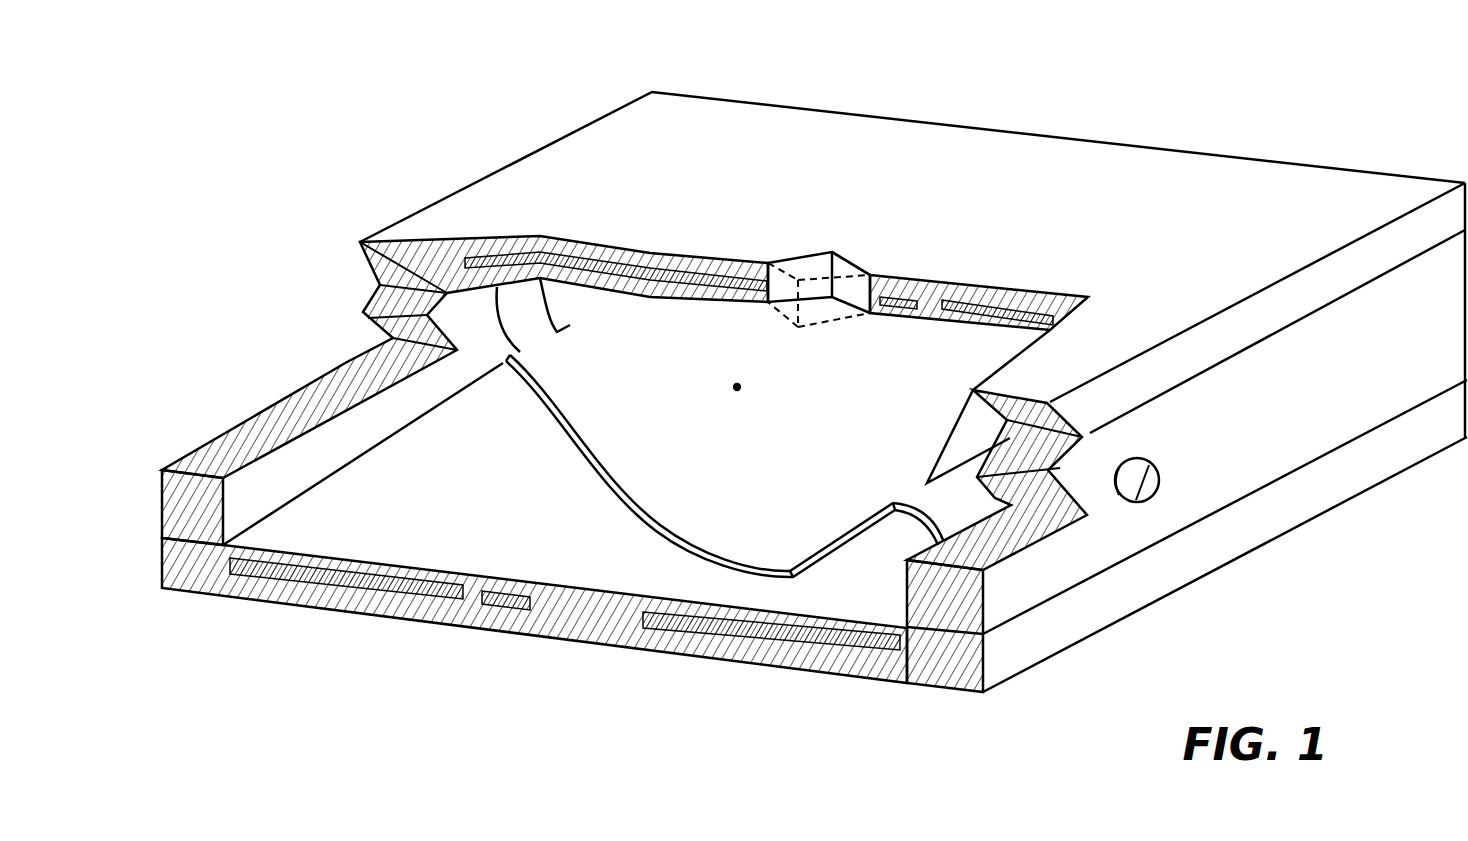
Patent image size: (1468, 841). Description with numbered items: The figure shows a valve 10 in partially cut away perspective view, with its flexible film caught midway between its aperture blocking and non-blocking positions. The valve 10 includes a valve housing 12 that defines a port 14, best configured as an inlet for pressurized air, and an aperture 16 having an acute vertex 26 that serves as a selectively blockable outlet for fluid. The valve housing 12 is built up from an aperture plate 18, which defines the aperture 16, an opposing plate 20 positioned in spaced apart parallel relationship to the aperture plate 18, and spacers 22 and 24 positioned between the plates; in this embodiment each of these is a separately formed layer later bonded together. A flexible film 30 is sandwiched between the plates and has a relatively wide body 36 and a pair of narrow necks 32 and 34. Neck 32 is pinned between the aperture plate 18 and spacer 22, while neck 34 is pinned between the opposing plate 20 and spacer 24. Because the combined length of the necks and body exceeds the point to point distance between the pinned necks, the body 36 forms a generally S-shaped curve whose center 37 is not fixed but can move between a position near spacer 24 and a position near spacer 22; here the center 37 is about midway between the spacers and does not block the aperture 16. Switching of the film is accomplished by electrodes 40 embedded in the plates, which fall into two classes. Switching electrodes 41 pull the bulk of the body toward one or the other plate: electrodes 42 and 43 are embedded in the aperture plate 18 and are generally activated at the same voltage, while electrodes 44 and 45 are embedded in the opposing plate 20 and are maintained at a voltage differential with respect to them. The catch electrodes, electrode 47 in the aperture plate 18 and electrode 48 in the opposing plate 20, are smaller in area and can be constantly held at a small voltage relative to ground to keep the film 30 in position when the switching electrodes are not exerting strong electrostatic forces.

The valve 10 is at (1190, 77).
The valve housing 12 is at (810, 102).
The port 14 is at (1145, 470).
The aperture 16 is at (797, 244).
The aperture plate 18 is at (1185, 180).
The opposing plate 20 is at (183, 587).
The spacer 22 is at (240, 437).
The spacer 24 is at (960, 690).
The acute vertex 26 is at (868, 275).
The flexible film 30 is at (677, 538).
The neck 32 is at (527, 322).
The neck 34 is at (930, 505).
The body 36 is at (718, 480).
The center 37 is at (737, 387).
The electrodes 40 is at (757, 262).
The switching electrodes 41 is at (1070, 290).
The switching electrode 42 is at (645, 293).
The switching electrode 43 is at (955, 315).
The switching electrode 44 is at (302, 558).
The switching electrode 45 is at (693, 612).
The catch electrode 47 is at (892, 288).
The catch electrode 48 is at (508, 610).